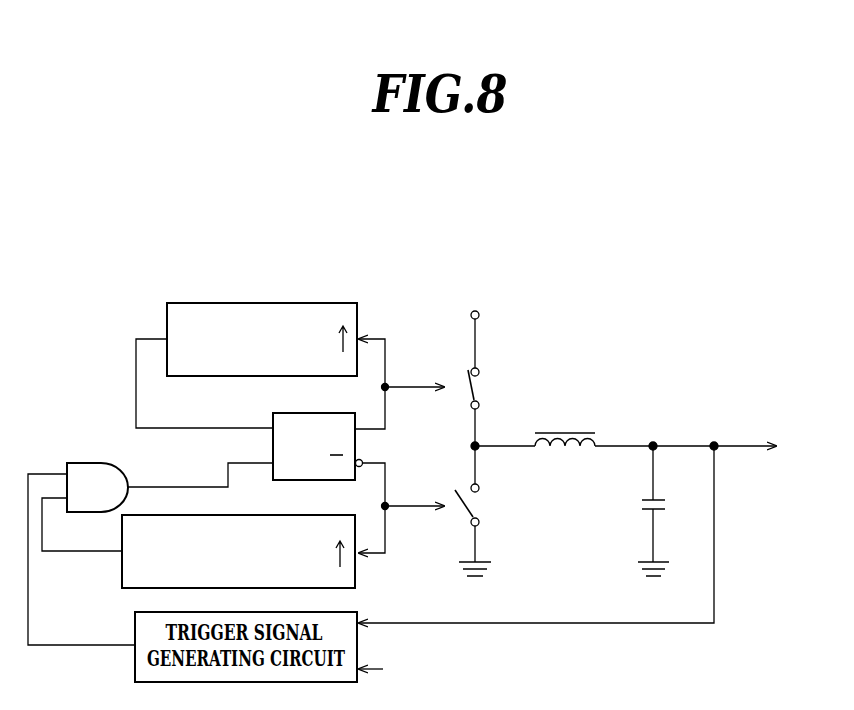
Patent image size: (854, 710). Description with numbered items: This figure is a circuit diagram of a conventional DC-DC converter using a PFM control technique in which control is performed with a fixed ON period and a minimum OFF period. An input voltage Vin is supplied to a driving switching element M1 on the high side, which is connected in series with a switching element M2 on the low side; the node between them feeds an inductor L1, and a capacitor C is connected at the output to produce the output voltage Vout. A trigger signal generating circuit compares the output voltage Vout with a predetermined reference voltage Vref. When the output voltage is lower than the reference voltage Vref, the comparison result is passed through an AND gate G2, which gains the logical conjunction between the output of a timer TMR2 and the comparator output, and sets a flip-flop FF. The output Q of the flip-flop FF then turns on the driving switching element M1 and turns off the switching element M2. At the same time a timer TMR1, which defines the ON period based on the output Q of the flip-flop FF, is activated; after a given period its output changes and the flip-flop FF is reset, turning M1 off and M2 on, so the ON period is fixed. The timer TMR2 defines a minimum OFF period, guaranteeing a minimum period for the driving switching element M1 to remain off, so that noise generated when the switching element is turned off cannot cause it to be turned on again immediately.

The timer TMR1 is at (260, 303).
The timer TMR2 is at (122, 562).
The flip-flop FF is at (273, 480).
The AND gate G2 is at (85, 462).
The driving switching element M1 is at (492, 388).
The switching element M2 is at (484, 505).
The inductor L1 is at (565, 459).
The capacitor C is at (645, 511).
The input voltage Vin is at (470, 302).
The output voltage Vout is at (808, 450).
The reference voltage Vref is at (394, 671).